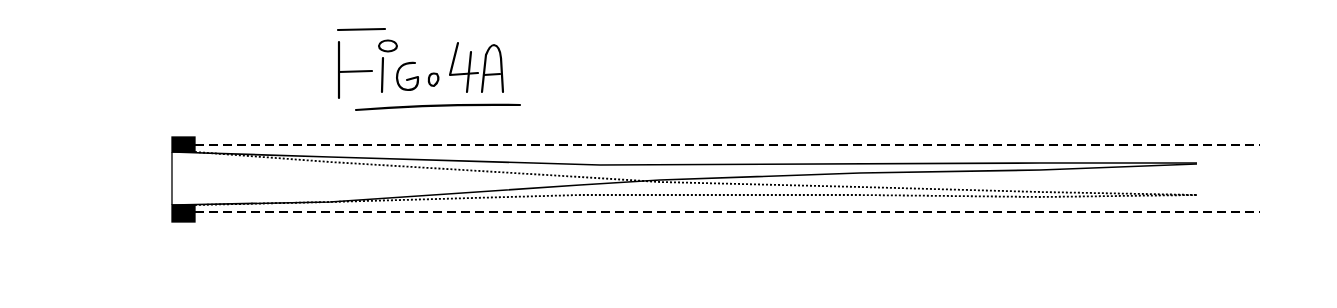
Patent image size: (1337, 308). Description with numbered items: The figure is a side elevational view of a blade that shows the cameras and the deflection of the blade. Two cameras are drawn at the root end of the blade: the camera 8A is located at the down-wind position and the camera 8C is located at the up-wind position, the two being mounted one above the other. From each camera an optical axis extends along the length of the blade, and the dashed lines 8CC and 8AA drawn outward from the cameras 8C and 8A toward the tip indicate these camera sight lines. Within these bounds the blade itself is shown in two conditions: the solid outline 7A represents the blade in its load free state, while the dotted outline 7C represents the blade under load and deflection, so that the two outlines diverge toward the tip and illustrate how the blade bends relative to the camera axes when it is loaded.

The camera 8C is at (181, 137).
The camera 8A is at (181, 222).
The upper boundary of light guide 8CC is at (1212, 133).
The lower boundary of light guide 8AA is at (1222, 203).
The blade in load free state 7A is at (698, 164).
The blade under load and deflection 7C is at (752, 188).